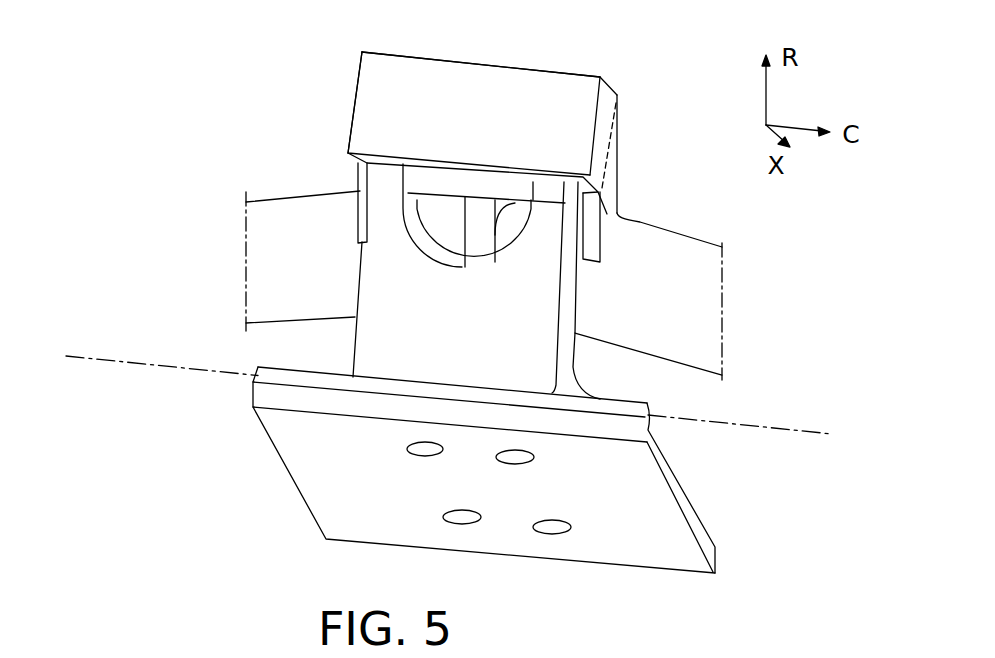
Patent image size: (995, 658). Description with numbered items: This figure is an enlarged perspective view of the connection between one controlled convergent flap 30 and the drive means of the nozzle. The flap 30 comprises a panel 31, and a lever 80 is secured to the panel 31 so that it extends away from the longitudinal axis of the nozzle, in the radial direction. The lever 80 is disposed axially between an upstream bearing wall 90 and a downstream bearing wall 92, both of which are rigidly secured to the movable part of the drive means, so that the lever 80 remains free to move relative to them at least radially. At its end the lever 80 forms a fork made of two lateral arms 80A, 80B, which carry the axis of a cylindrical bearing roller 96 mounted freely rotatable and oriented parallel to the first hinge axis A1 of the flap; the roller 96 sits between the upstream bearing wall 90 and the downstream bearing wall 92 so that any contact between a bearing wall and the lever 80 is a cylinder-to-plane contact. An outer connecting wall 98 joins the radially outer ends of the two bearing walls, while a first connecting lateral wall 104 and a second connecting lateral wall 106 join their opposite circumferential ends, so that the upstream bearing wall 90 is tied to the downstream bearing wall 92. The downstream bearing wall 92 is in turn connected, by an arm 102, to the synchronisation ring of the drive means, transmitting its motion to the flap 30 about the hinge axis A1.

The controlled convergent flap 30 is at (690, 490).
The panel 31 is at (630, 535).
The lever 80 is at (390, 280).
The lateral arm 80A is at (553, 218).
The lateral arm 80B is at (380, 198).
The upstream bearing wall 90 is at (390, 76).
The downstream bearing wall 92 is at (612, 141).
The bearing roller 96 is at (450, 182).
The outer connecting wall 98 is at (548, 70).
The arm 102 is at (612, 197).
The first connecting lateral wall 104 is at (608, 105).
The second connecting lateral wall 106 is at (352, 112).
The first hinge axis A1 is at (792, 427).